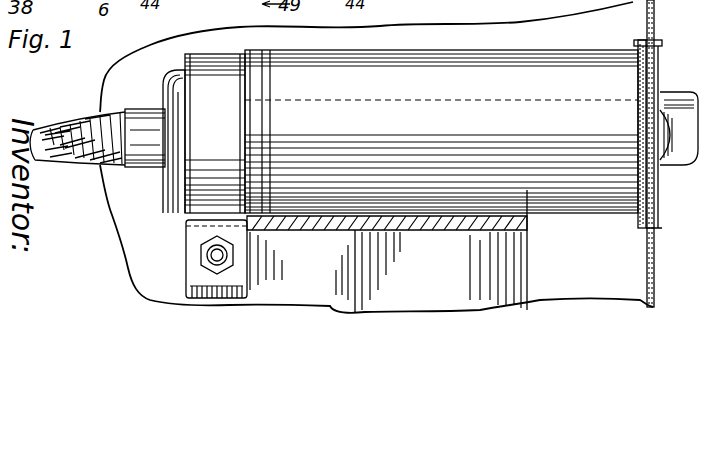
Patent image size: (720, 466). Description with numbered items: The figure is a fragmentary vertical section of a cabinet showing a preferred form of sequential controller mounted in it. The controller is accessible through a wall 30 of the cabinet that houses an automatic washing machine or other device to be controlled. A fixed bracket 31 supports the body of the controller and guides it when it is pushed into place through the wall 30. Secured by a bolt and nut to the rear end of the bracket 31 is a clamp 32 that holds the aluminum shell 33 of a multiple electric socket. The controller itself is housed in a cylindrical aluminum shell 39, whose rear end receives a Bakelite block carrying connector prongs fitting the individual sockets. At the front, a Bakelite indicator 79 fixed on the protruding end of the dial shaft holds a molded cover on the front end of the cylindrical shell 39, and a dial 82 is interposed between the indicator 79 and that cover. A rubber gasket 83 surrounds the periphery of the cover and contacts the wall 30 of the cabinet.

The wall 30 is at (656, 286).
The fixed bracket 31 is at (525, 270).
The clamp 32 is at (222, 52).
The aluminum shell 33 is at (165, 82).
The cylindrical aluminum shell 39 is at (442, 52).
The Bakelite indicator 79 is at (685, 98).
The dial 82 is at (663, 72).
The rubber gasket 83 is at (660, 40).